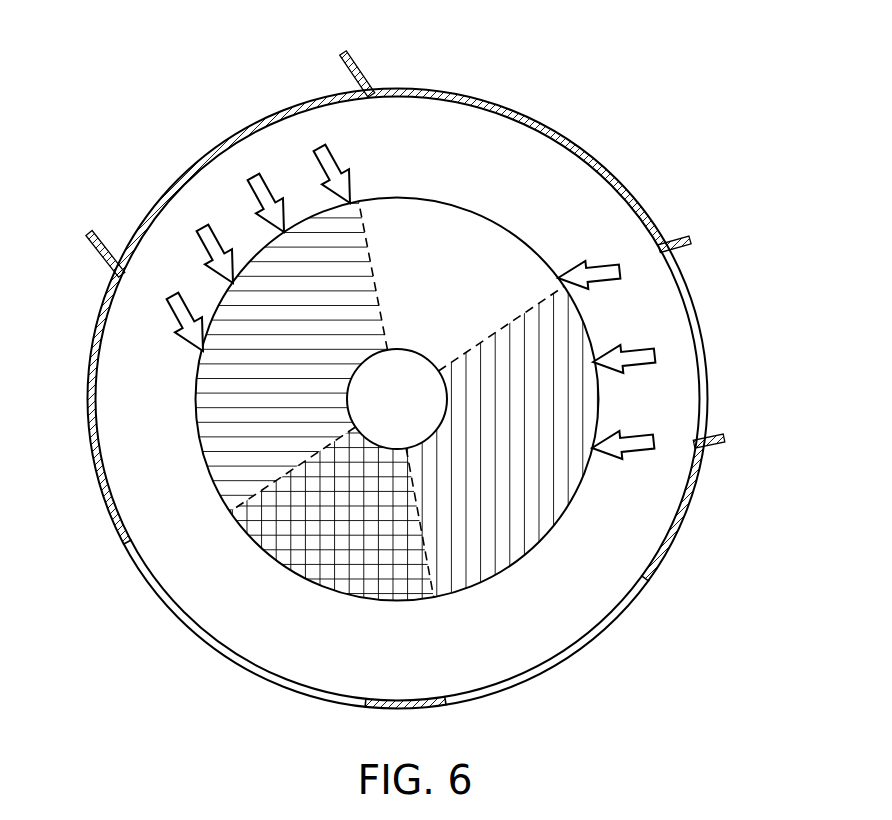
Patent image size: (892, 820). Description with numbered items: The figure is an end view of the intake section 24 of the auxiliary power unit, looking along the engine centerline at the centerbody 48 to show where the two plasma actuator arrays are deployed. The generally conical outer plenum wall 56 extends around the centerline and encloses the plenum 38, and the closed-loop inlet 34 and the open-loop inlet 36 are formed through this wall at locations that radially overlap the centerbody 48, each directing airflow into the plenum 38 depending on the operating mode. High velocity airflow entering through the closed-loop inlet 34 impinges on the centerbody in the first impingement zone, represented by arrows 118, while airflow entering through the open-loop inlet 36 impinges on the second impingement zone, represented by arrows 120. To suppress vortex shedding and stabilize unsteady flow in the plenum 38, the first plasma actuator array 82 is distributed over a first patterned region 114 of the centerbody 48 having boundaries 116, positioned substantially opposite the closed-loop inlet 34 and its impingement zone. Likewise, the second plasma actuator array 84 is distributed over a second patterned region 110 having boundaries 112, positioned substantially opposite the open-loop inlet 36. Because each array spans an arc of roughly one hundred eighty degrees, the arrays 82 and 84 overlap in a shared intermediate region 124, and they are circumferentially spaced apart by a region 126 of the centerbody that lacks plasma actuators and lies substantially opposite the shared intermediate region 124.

The intake section 24 is at (662, 120).
The closed-loop inlet 34 is at (706, 347).
The open-loop inlet 36 is at (232, 141).
The plenum 38 is at (477, 164).
The centerbody 48 is at (518, 219).
The outer plenum wall 56 is at (514, 107).
The plasma actuator array 82 is at (191, 414).
The plasma actuator array 84 is at (585, 506).
The second patterned region 110 is at (484, 450).
The boundaries 112 is at (508, 326).
The first patterned region 114 is at (276, 373).
The boundaries 116 is at (372, 268).
The arrows 118 is at (602, 267).
The arrows 120 is at (335, 163).
The shared intermediate region 124 is at (327, 537).
The region lacking plasma actuators 126 is at (422, 292).